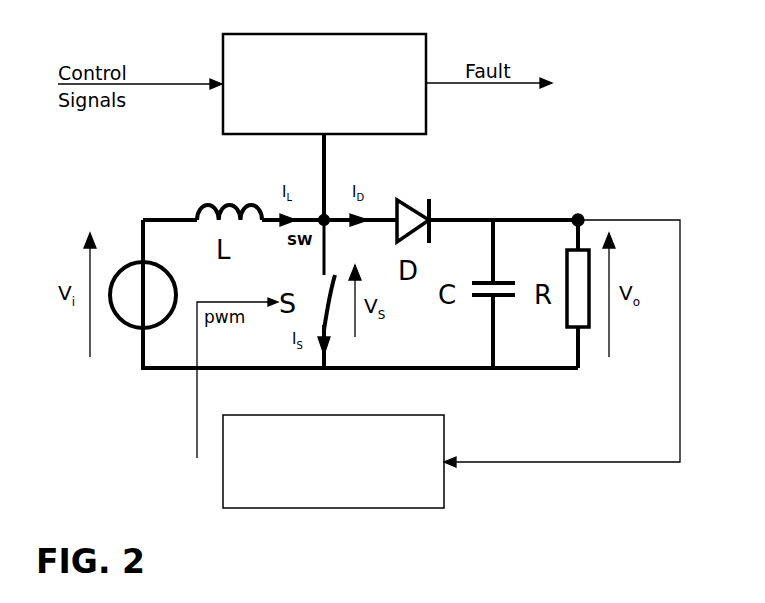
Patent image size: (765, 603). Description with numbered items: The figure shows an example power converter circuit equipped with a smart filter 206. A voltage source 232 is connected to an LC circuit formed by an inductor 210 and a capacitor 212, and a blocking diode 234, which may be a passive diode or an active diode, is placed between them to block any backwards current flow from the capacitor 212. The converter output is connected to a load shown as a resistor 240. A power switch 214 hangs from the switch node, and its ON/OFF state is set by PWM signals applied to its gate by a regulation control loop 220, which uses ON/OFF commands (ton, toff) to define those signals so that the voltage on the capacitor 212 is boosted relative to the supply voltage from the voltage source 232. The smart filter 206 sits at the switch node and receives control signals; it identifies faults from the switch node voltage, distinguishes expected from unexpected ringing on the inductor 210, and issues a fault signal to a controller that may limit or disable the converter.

The smart filter 206 is at (324, 84).
The inductor 210 is at (228, 205).
The capacitor 212 is at (479, 282).
The power switch 214 is at (331, 322).
The regulation control loop 220 is at (333, 461).
The voltage source 232 is at (128, 263).
The blocking diode 234 is at (412, 208).
The resistor 240 is at (590, 312).